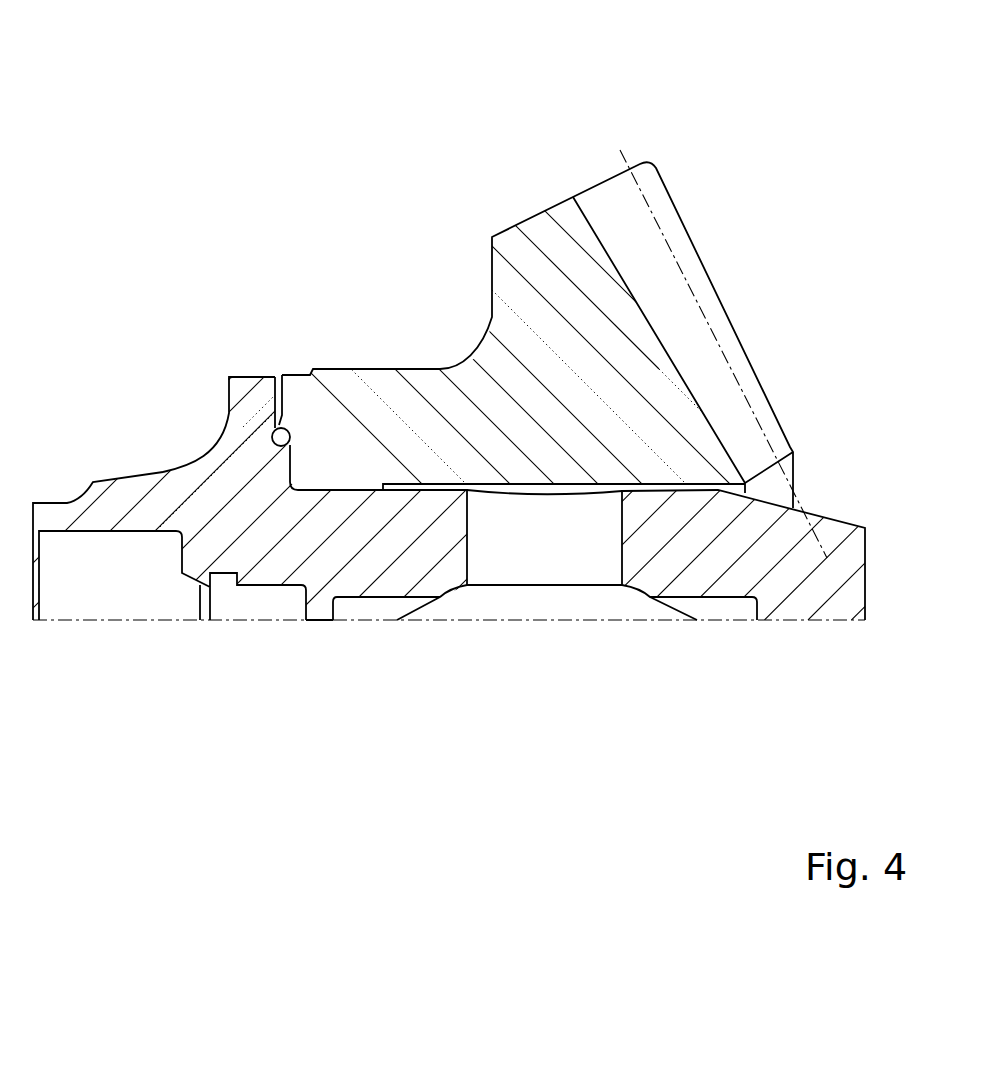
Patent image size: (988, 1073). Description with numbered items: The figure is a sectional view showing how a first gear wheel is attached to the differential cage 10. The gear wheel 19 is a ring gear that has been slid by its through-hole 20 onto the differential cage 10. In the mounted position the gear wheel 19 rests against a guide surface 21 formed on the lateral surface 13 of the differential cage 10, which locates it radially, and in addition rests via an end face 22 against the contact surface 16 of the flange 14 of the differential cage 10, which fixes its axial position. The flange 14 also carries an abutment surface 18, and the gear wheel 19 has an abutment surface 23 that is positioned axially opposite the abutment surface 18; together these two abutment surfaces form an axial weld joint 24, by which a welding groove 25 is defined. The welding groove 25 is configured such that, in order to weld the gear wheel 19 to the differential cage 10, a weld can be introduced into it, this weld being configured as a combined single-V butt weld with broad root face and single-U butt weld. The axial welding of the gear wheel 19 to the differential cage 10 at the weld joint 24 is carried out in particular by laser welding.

The differential cage 10 is at (63, 517).
The lateral surface 13 is at (360, 465).
The flange 14 is at (247, 418).
The contact surface 16 is at (297, 467).
The abutment surface 18 is at (294, 388).
The gear wheel 19 is at (553, 235).
The through-hole 20 is at (535, 485).
The guide surface 21 is at (338, 495).
The end face 22 is at (300, 468).
The abutment surface 23 is at (276, 407).
The axial weld joint 24 is at (273, 357).
The welding groove 25 is at (284, 357).